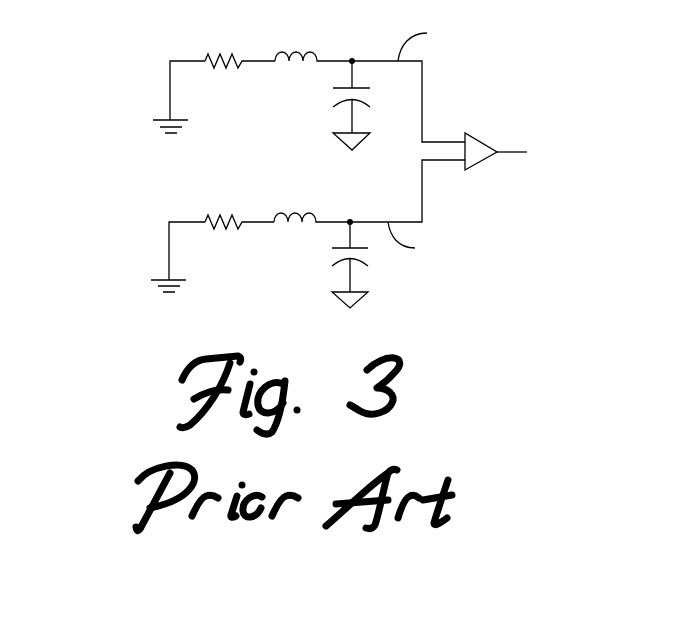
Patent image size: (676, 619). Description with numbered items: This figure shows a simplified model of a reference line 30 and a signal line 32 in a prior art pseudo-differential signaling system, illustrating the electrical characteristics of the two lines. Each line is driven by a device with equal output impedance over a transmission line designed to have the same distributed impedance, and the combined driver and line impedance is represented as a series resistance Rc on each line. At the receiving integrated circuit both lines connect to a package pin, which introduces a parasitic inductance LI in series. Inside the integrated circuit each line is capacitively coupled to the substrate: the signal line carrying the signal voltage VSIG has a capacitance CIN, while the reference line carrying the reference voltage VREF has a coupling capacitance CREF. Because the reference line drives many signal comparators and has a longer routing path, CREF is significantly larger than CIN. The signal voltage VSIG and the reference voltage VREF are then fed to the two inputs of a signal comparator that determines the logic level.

The signal line 32 is at (166, 52).
The reference line 30 is at (165, 213).
The transmission line and driver impedance Rc is at (240, 75).
The parasitic inductance LI is at (313, 77).
The capacitance of the signal line CIN is at (371, 123).
The coupling capacitance of the reference line CREF is at (376, 283).
The signal voltage VSIG is at (436, 41).
The reference voltage VREF is at (428, 245).